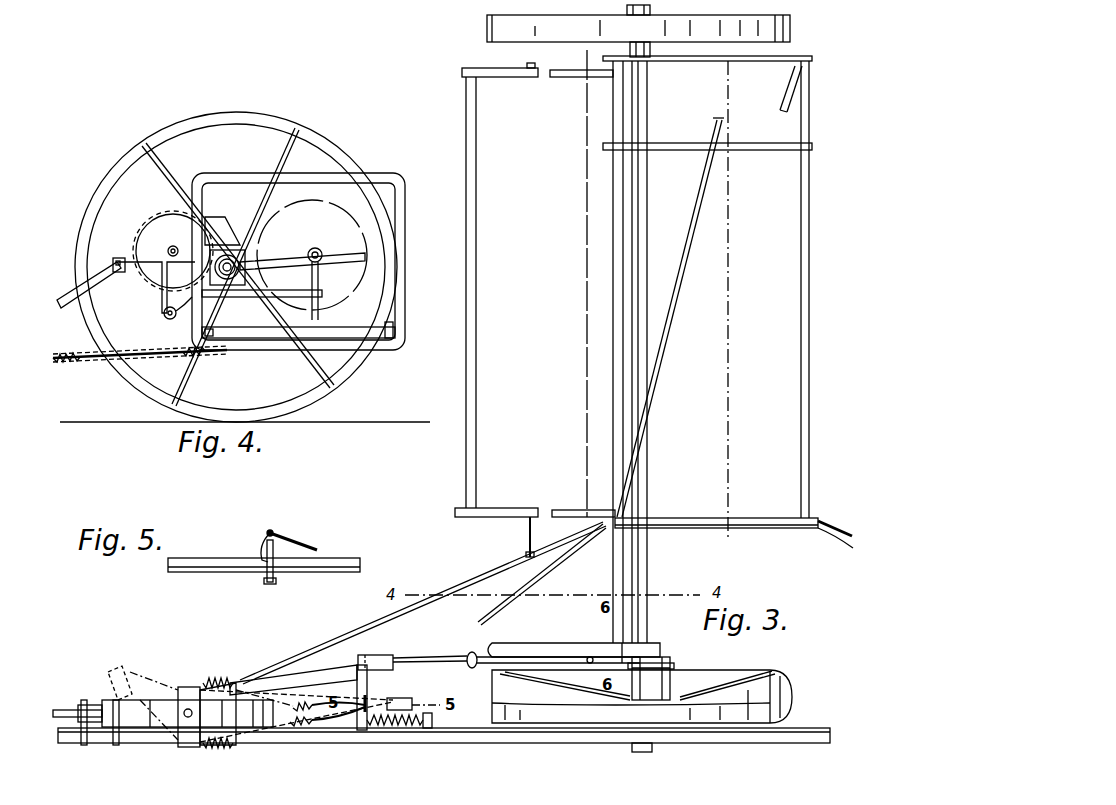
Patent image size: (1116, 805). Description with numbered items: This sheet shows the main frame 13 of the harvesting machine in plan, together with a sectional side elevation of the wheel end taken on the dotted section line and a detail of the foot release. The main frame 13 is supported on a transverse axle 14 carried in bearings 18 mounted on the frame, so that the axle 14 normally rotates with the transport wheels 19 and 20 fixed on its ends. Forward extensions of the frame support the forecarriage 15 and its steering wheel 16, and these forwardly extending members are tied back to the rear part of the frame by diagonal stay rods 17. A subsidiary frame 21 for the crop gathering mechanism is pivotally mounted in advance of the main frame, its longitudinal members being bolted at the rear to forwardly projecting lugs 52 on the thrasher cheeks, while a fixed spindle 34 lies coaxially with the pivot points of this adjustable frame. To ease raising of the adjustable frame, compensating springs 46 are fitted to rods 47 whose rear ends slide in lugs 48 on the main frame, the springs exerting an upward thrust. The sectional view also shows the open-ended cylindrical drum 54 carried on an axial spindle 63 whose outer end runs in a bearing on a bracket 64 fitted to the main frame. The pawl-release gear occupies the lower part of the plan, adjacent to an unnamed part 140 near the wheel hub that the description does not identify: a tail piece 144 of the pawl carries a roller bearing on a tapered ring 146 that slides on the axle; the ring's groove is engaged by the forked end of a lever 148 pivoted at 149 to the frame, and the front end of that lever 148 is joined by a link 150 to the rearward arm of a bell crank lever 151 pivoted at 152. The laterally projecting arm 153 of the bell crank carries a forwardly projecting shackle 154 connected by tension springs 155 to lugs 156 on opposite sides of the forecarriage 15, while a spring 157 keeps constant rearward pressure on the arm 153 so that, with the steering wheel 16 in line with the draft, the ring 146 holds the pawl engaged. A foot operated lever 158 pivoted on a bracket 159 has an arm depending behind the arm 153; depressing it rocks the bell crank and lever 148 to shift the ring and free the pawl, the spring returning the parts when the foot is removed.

In FIG. 3, the main frame 13 is at (682, 528).
In FIG. 5, the main frame 13 is at (306, 567).
In FIG. 4, the main frame 13 is at (250, 345).
In FIG. 3, the transverse axle 14 is at (640, 333).
In FIG. 4, the transverse axle 14 is at (250, 264).
In FIG. 3, the forecarriage 15 is at (182, 745).
In FIG. 3, the steering wheel 16 is at (130, 672).
In FIG. 3, the diagonal stay rods 17 is at (478, 614).
In FIG. 4, the bearings 18 is at (255, 268).
In FIG. 3, the transport wheel 19 is at (642, 696).
In FIG. 3, the transport wheel 20 is at (487, 35).
In FIG. 4, the transport wheel 20 is at (340, 369).
In FIG. 3, the subsidiary frame 21 is at (477, 308).
In FIG. 4, the subsidiary frame 21 is at (100, 270).
In FIG. 3, the fixed spindle 34 is at (528, 540).
In FIG. 4, the compensating springs 46 is at (66, 361).
In FIG. 4, the rods 47 is at (150, 350).
In FIG. 4, the lugs 48 is at (204, 356).
In FIG. 4, the forwardly projecting lugs 52 is at (120, 272).
In FIG. 4, the cylindrical drum 54 is at (345, 175).
In FIG. 4, the spindle 63 is at (321, 252).
In FIG. 4, the bracket 64 is at (318, 302).
In FIG. 3, the bearing 140 is at (674, 666).
In FIG. 3, the tail piece 144 is at (658, 667).
In FIG. 3, the tapered ring 146 is at (622, 657).
In FIG. 3, the lever 148 is at (590, 658).
In FIG. 3, the pivot 149 is at (577, 663).
In FIG. 3, the link 150 is at (476, 652).
In FIG. 3, the bell crank lever 151 is at (430, 658).
In FIG. 3, the pivot 152 is at (375, 660).
In FIG. 3, the laterally projecting arm 153 is at (370, 698).
In FIG. 5, the laterally projecting arm 153 is at (265, 580).
In FIG. 3, the shackle 154 is at (358, 730).
In FIG. 3, the tension springs 155 is at (318, 696).
In FIG. 3, the lugs 156 is at (204, 682).
In FIG. 3, the spring 157 is at (392, 728).
In FIG. 3, the foot operated lever 158 is at (412, 698).
In FIG. 5, the foot operated lever 158 is at (312, 549).
In FIG. 5, the bracket 159 is at (262, 552).